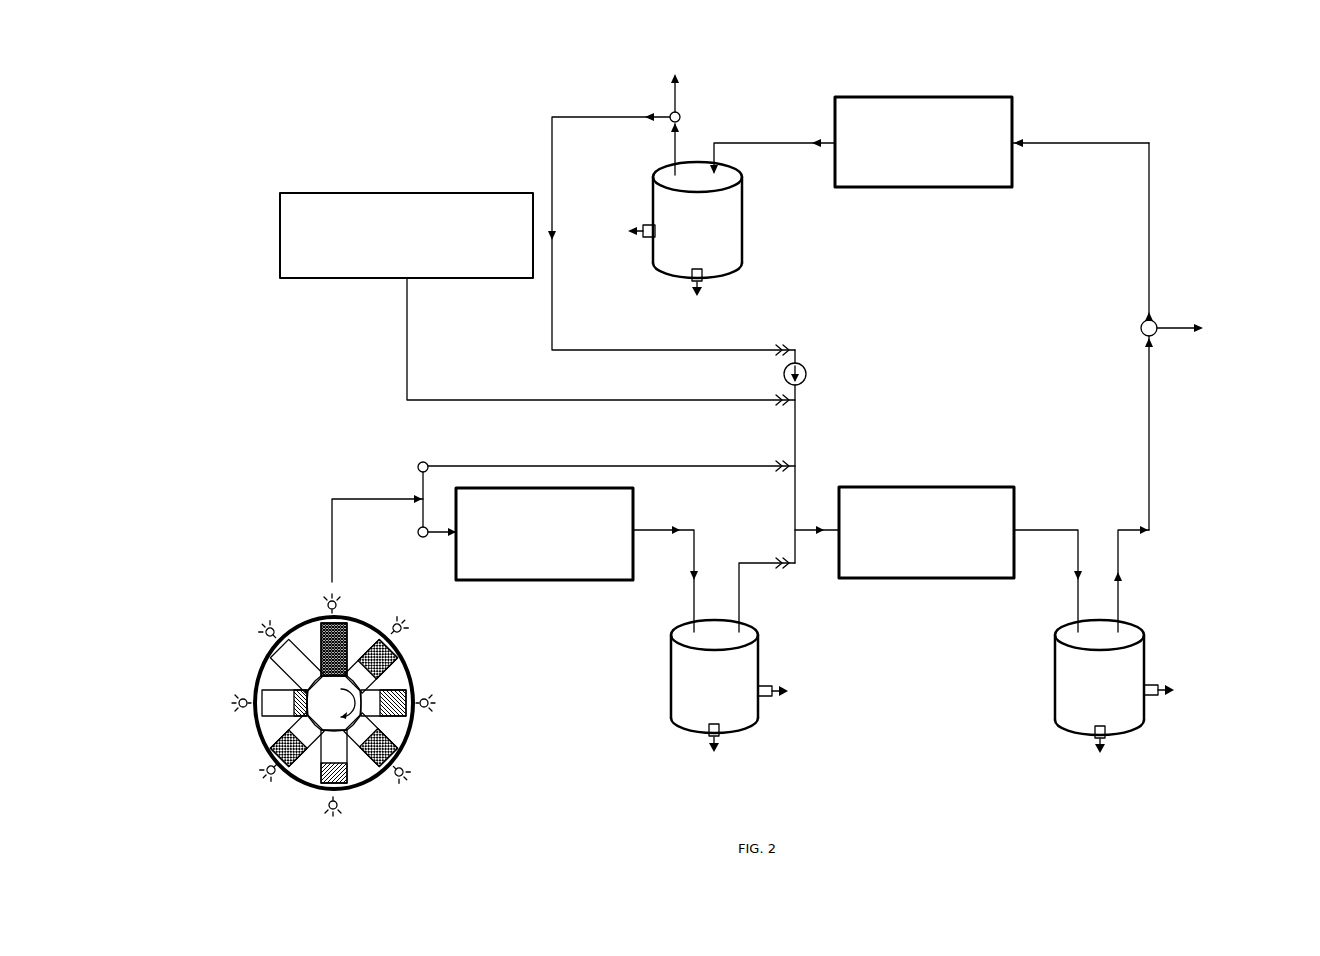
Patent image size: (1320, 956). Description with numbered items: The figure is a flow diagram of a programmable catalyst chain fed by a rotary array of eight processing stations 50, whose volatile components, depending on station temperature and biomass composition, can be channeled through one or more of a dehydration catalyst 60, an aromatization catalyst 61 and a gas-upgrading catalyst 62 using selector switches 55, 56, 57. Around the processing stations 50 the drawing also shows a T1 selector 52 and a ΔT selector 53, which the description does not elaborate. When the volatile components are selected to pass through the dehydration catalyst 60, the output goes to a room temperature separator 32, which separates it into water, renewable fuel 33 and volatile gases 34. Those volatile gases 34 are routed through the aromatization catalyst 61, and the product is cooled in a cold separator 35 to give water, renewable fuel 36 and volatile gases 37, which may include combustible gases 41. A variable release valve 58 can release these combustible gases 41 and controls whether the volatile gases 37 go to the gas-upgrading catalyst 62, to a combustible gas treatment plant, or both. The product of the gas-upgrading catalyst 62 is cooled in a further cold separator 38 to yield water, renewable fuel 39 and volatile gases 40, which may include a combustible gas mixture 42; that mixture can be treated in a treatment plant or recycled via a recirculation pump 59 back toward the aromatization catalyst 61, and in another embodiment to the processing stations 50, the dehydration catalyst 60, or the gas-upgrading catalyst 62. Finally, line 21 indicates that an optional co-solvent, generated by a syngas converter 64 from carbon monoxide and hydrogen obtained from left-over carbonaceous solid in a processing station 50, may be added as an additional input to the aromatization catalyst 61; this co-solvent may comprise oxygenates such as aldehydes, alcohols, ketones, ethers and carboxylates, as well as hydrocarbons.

The line 21 is at (407, 310).
The room temperature separator 32 is at (667, 702).
The renewable fuel 33 is at (830, 687).
The volatile gases 34 is at (765, 603).
The cold separator 35 is at (1055, 705).
The renewable fuel 36 is at (1213, 687).
The volatile gases 37 is at (1150, 587).
The cold separator 38 is at (742, 223).
The renewable fuel 39 is at (645, 223).
The volatile gases 40 is at (657, 147).
The combustible gases 41 is at (1262, 368).
The combustible gas mixture 42 is at (660, 50).
The processing station 50 is at (307, 757).
The T1 selector 52 is at (265, 628).
The delta T selector 53 is at (248, 710).
The selector switch 55 is at (680, 110).
The selector switch 56 is at (418, 465).
The selector switch 57 is at (418, 532).
The variable release valve 58 is at (1155, 318).
The recirculation pump 59 is at (803, 360).
The dehydration catalyst 60 is at (497, 580).
The aromatization catalyst 61 is at (925, 580).
The gas-upgrading catalyst 62 is at (997, 95).
The syngas converter 64 is at (295, 193).